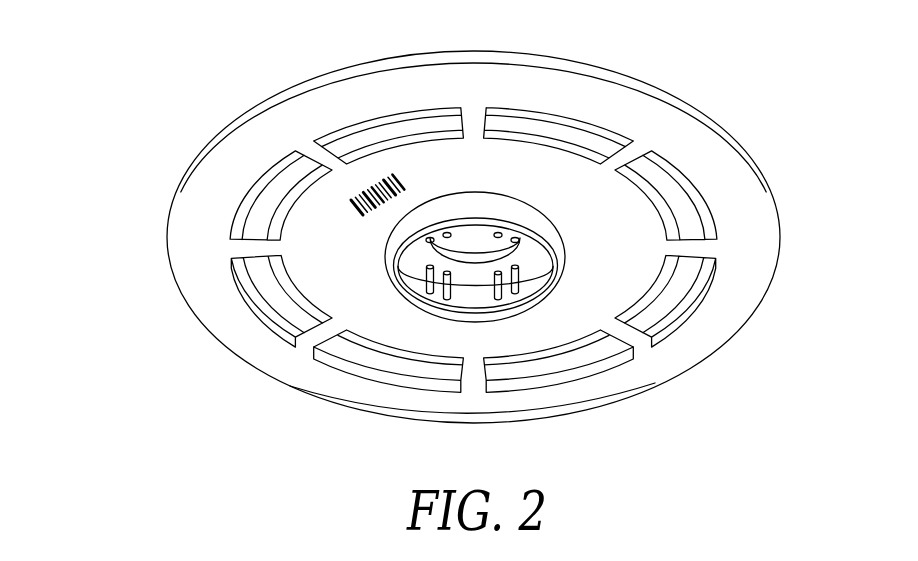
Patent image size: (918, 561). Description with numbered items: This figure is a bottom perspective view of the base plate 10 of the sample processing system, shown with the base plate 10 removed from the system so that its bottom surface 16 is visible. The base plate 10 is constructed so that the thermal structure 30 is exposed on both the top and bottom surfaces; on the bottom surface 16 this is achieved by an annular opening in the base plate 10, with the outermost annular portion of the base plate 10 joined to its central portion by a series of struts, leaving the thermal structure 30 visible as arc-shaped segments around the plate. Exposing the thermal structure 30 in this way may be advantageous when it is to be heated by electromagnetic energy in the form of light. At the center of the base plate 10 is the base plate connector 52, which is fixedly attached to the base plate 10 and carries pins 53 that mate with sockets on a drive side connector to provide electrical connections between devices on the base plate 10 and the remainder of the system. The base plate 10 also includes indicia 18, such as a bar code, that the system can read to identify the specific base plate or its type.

The base plate 10 is at (442, 238).
The bottom surface 16 is at (305, 381).
The indicia 18 is at (412, 184).
The thermal structure 30 is at (392, 130).
The base plate connector 52 is at (405, 228).
The pins 53 is at (516, 294).